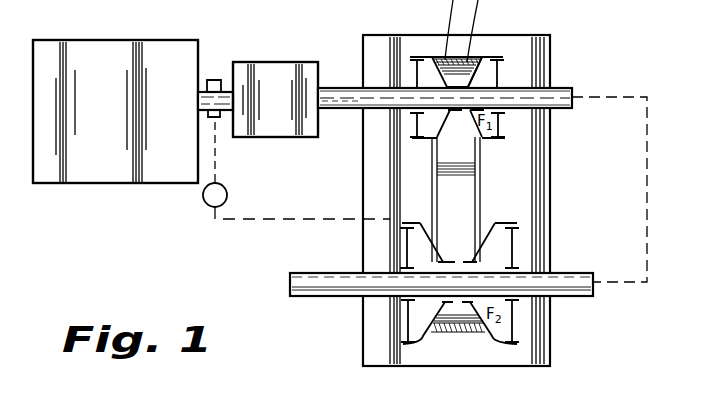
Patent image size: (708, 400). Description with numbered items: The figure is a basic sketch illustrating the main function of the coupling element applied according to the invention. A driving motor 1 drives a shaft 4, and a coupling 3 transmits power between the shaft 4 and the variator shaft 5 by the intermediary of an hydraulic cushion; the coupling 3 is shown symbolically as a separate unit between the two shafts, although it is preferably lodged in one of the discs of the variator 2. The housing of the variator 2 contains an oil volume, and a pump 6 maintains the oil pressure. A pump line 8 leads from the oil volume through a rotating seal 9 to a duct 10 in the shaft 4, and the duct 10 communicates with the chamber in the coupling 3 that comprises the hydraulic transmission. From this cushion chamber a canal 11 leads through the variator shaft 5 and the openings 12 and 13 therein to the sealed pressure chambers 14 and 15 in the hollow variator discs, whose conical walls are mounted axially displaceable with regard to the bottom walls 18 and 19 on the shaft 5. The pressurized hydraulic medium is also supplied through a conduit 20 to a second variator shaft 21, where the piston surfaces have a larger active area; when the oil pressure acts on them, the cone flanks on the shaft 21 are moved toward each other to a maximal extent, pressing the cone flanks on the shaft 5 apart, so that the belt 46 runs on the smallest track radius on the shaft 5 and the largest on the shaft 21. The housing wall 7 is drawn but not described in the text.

The driving motor 1 is at (78, 186).
The variator 2 is at (488, 192).
The coupling 3 is at (258, 57).
The shaft 4 is at (228, 93).
The variator shaft 5 is at (445, 84).
The pump 6 is at (203, 203).
The housing wall 7 is at (550, 195).
The pump line 8 is at (270, 220).
The rotating seal 9 is at (222, 115).
The duct 10 is at (197, 97).
The canal 11 is at (348, 100).
The opening 12 is at (410, 88).
The opening 13 is at (505, 90).
The sealed pressure chamber 14 is at (433, 75).
The sealed pressure chamber 15 is at (488, 83).
The bottom wall 18 is at (417, 115).
The bottom wall 19 is at (503, 118).
The conduit 20 is at (645, 200).
The second variator shaft 21 is at (577, 297).
The belt 46 is at (463, 333).